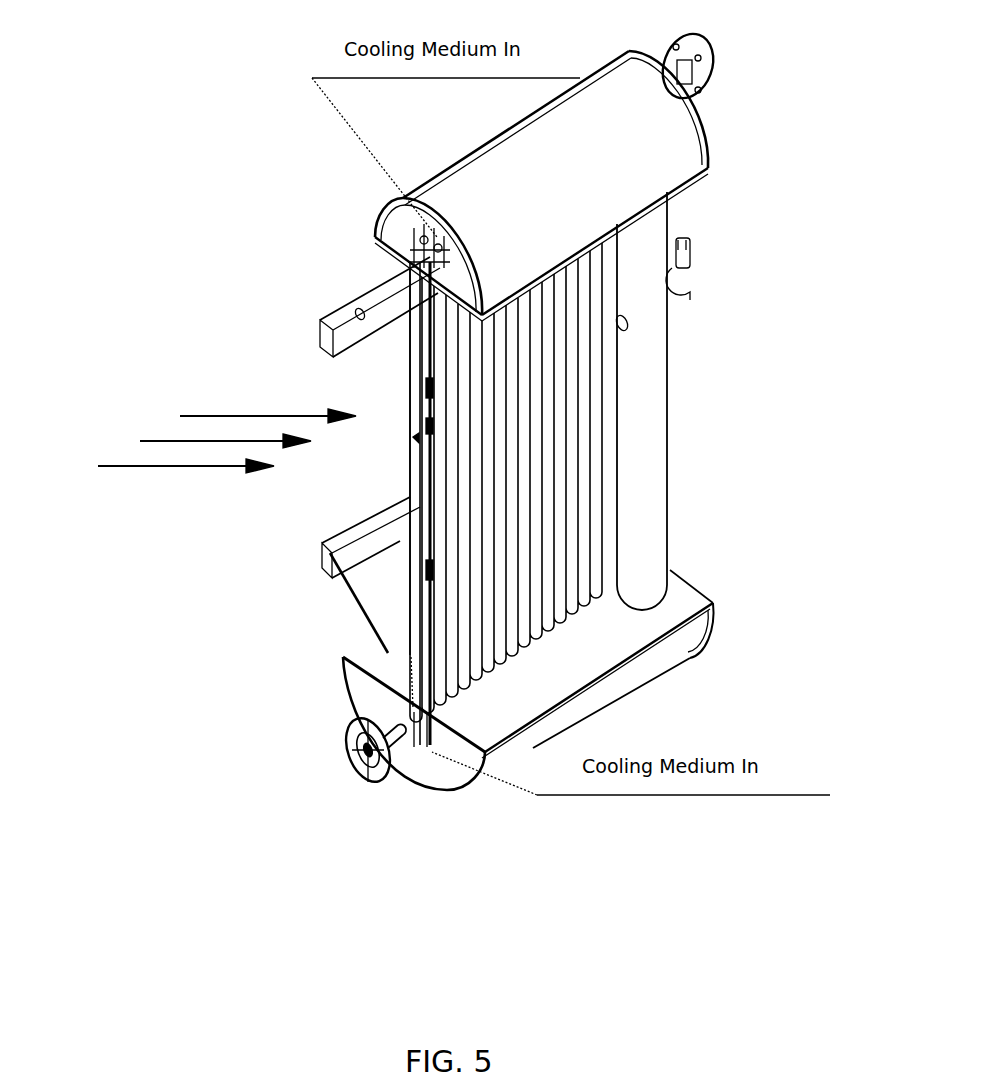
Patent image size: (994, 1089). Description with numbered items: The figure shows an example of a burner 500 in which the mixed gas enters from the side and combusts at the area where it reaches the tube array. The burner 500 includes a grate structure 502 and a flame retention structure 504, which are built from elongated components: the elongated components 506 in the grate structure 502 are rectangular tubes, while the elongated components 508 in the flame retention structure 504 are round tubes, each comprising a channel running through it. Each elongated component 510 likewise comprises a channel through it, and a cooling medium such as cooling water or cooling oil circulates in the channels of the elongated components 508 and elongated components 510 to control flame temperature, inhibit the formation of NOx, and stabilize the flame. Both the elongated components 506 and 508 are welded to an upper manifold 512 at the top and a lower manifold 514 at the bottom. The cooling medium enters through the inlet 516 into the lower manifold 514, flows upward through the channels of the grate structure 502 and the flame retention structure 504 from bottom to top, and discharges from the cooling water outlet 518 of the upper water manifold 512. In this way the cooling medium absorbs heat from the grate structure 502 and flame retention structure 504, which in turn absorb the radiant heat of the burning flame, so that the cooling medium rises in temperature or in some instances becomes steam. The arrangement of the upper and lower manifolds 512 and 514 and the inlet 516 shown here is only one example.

The burner 500 is at (66, 78).
The grate structure 502 is at (418, 438).
The flame retention structure 504 is at (410, 520).
The elongated components 506 is at (408, 262).
The elongated components 508 is at (430, 297).
The elongated component 510 is at (227, 421).
The upper manifold 512 is at (675, 157).
The lower manifold 514 is at (710, 622).
The inlet 516 is at (346, 742).
The cooling water outlet 518 is at (712, 57).